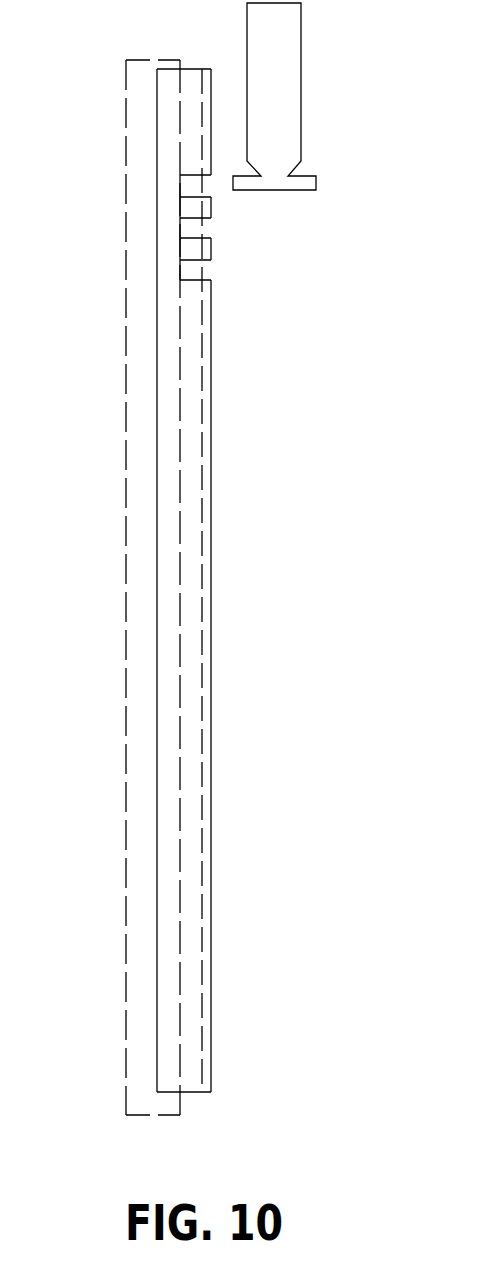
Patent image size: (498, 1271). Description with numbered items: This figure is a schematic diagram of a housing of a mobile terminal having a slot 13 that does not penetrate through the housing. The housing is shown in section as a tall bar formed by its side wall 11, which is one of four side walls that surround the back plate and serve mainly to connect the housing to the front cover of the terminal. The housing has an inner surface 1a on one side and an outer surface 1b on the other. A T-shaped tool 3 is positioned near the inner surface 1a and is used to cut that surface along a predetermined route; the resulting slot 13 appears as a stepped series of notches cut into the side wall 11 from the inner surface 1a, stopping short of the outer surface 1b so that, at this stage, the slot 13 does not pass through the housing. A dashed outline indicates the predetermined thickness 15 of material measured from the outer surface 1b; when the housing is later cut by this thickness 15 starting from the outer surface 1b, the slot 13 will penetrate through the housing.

The T-shaped tool 3 is at (283, 135).
The side wall 11 is at (172, 580).
The slot 13 is at (192, 273).
The predetermined thickness 15 is at (133, 423).
The inner surface 1a is at (208, 498).
The outer surface 1b is at (157, 523).